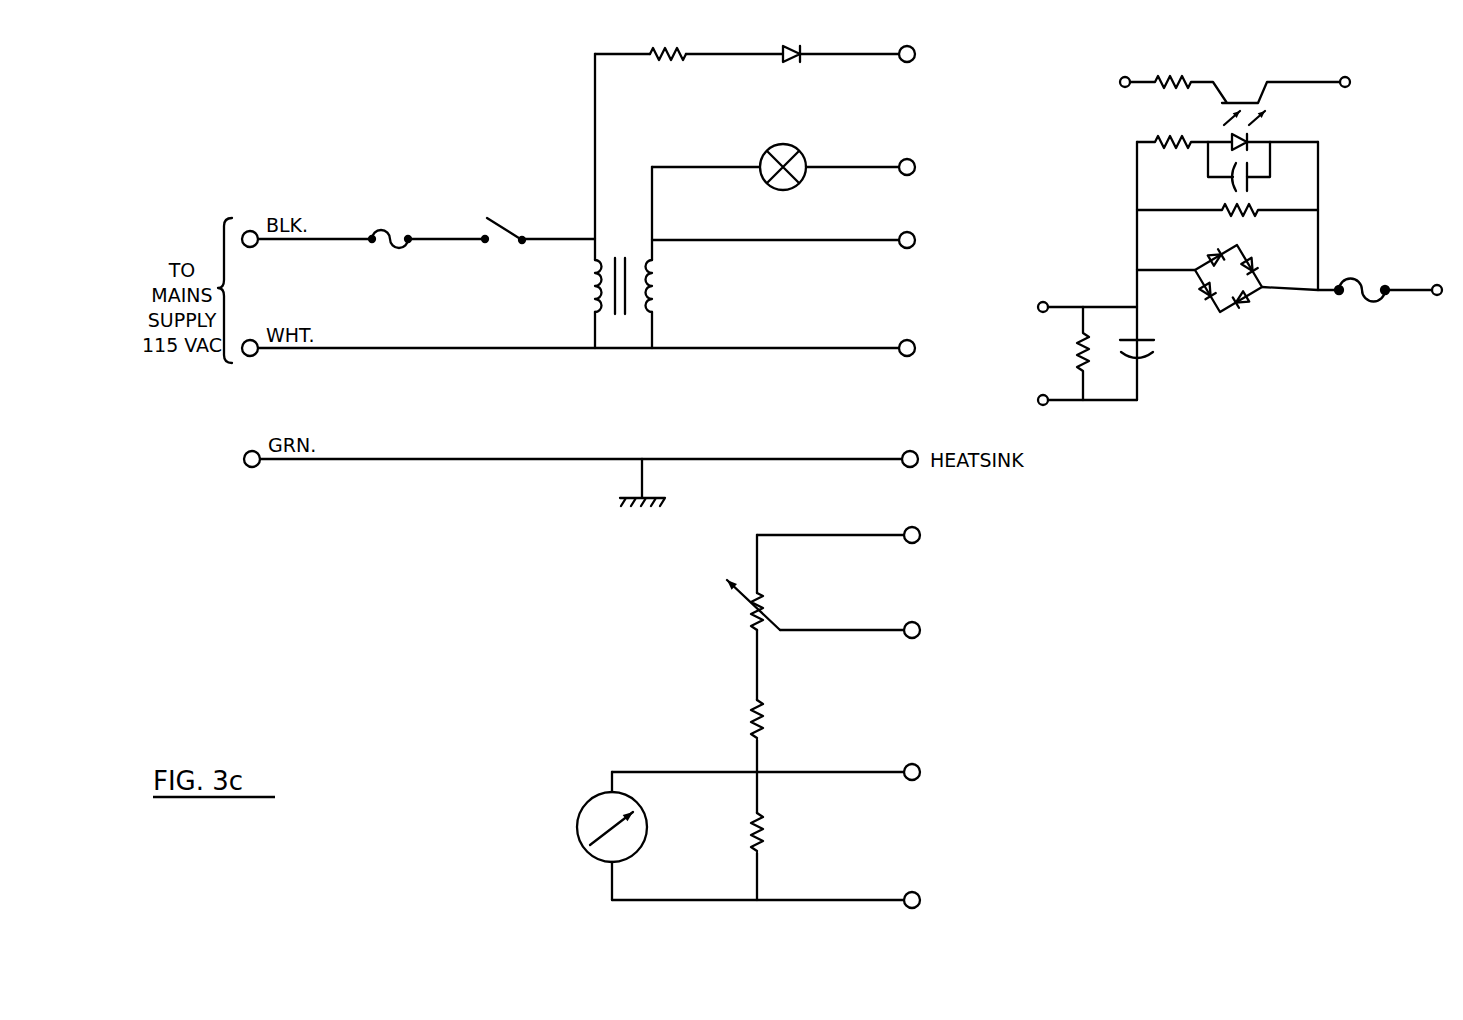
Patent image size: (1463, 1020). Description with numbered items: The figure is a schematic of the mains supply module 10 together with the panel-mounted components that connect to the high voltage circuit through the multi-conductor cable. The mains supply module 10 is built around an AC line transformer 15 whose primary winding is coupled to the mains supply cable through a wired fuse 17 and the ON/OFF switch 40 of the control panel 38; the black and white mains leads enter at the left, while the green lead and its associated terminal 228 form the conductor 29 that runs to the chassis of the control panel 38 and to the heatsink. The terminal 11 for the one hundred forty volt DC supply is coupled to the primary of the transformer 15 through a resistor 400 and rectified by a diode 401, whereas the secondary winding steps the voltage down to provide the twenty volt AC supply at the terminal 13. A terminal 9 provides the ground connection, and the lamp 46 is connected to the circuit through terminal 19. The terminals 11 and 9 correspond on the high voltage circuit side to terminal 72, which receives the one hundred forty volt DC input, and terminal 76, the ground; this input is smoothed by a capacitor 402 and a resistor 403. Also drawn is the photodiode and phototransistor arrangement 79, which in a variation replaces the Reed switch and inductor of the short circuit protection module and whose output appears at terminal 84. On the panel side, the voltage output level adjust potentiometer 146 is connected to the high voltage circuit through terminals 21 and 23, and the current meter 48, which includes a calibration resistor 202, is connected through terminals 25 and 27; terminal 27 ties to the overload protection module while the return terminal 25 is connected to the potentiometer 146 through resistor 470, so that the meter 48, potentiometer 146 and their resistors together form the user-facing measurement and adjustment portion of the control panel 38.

The mains supply module 10 is at (431, 178).
The wired fuse 17 is at (388, 232).
The ON/OFF switch 40 is at (505, 232).
The AC line transformer 15 is at (597, 357).
The ground terminal 9 is at (905, 340).
The resistor 400 is at (672, 63).
The diode 401 is at (793, 66).
The terminal for 140 VDC supply 11 is at (905, 63).
The lamp 46 is at (800, 186).
The terminal 19 is at (903, 160).
The terminal for 20 VAC supply 13 is at (905, 233).
The ground terminal 228 is at (253, 449).
The conductor 29 is at (688, 458).
The control panel 38 is at (517, 780).
The terminal 21 is at (905, 528).
The voltage output level adjust potentiometer 146 is at (763, 602).
The terminal 23 is at (907, 623).
The resistor 470 is at (750, 718).
The return terminal 25 is at (907, 765).
The current meter 48 is at (577, 832).
The calibration resistor 202 is at (770, 833).
The terminal 27 is at (908, 893).
The photodiode and phototransistor arrangement 79 is at (1370, 172).
The terminal 84 is at (1437, 284).
The terminal 72 is at (1043, 301).
The terminal 76 is at (1041, 407).
The resistor 403 is at (1076, 352).
The capacitor 402 is at (1146, 340).